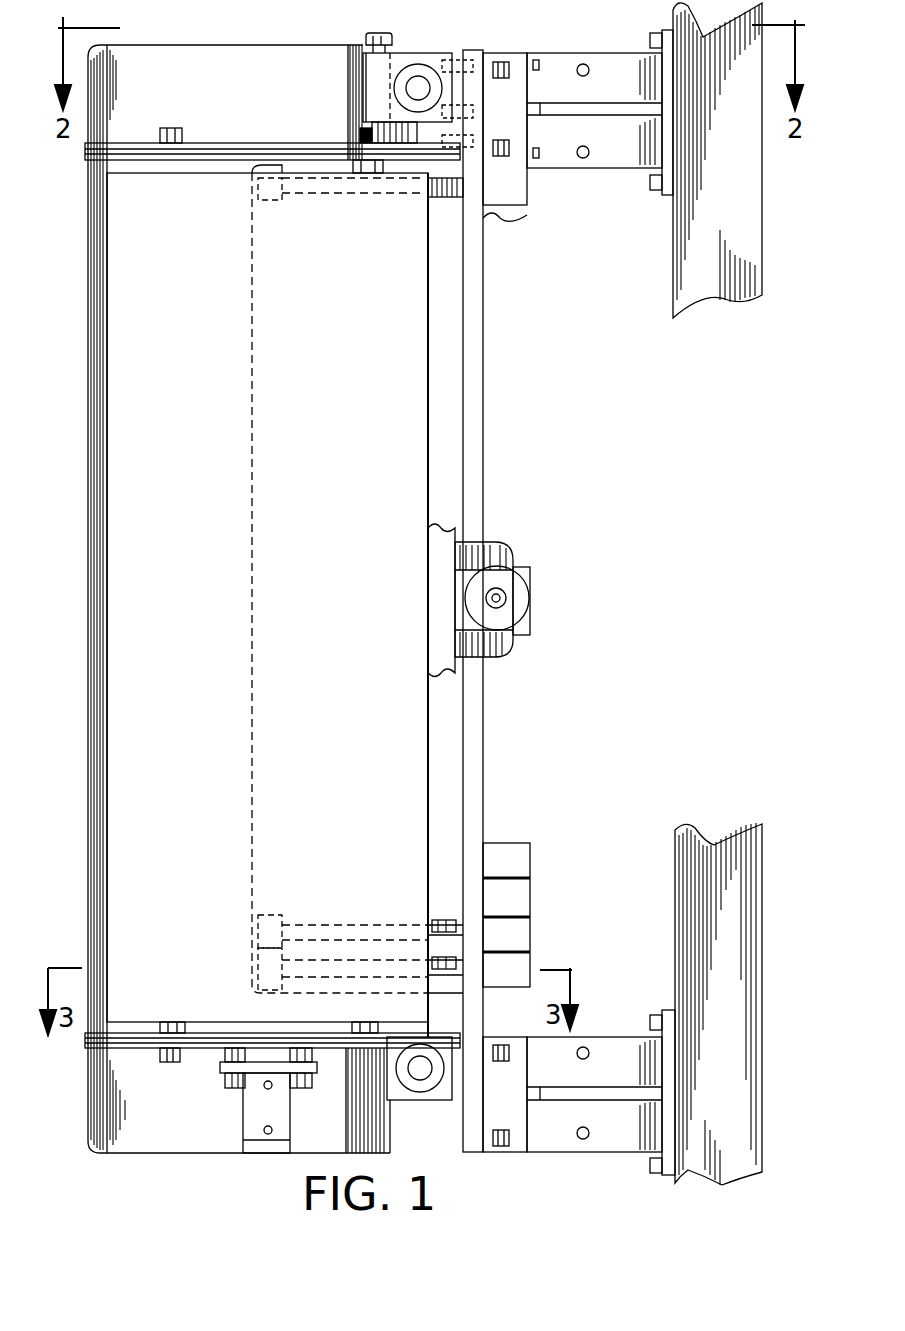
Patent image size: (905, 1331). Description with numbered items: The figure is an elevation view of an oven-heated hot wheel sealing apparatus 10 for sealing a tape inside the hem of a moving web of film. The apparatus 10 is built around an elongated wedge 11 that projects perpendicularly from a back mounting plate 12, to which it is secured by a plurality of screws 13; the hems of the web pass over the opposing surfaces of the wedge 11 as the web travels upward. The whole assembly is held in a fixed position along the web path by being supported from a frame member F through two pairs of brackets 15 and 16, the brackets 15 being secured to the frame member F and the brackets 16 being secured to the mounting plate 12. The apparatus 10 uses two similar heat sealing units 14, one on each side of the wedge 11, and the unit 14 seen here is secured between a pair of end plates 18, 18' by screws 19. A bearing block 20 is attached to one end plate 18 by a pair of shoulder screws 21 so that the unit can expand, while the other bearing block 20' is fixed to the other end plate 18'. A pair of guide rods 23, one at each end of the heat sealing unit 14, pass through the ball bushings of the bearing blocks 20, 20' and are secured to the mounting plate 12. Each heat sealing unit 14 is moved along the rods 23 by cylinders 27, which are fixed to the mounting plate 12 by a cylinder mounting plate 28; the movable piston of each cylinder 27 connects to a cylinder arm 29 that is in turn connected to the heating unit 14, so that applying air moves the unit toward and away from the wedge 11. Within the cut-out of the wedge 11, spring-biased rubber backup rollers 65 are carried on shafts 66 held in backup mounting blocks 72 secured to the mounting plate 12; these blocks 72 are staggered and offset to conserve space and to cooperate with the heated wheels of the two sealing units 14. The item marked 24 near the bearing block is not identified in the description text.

The oven-heated hot wheel sealing apparatus 10 is at (72, 614).
The elongated wedge 11 is at (97, 180).
The back mounting plate 12 is at (483, 396).
The screws 13 is at (485, 52).
The heat sealing unit 14 is at (178, 500).
The brackets 15 is at (660, 150).
The brackets 16 is at (490, 122).
The end plate 18 is at (252, 158).
The end plate 18' is at (252, 1051).
The screws 19 is at (176, 131).
The bearing block 20 is at (413, 73).
The bearing block 20' is at (336, 1095).
The shoulder screws 21 is at (375, 35).
The guide rods 23 is at (420, 88).
The bearing ring 24 is at (404, 70).
The cylinders 27 is at (520, 600).
The cylinder mounting plate 28 is at (513, 566).
The cylinder arm 29 is at (505, 652).
The rubber rollers 65 is at (265, 965).
The shafts 66 is at (445, 957).
The backup mounting blocks 72 is at (530, 897).
The frame member F is at (752, 233).